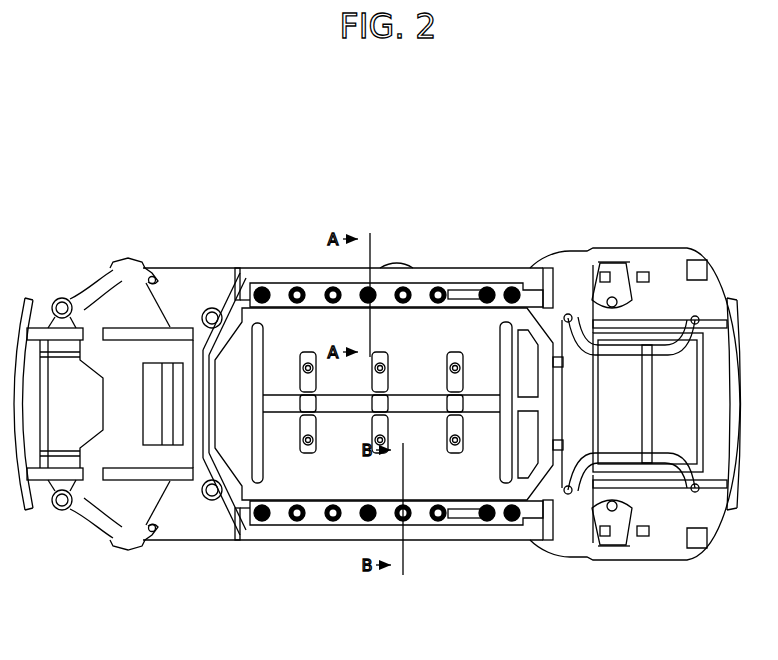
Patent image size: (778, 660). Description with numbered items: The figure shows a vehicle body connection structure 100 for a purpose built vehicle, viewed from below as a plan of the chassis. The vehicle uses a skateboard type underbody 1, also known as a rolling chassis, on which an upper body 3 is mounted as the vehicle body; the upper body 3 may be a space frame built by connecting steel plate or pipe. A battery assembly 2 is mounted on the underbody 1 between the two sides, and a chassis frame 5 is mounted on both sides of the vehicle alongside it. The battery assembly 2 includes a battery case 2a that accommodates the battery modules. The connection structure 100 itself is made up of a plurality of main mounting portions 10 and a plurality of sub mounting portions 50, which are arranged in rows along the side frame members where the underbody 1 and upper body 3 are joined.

The vehicle body connection structure 100 is at (352, 155).
The underbody 1 is at (447, 266).
The upper body 3 is at (190, 266).
The chassis frame 5 is at (348, 536).
The battery assembly 2 is at (467, 494).
The battery case 2a is at (280, 463).
The main mounting portions 10 is at (260, 286).
The sub mounting portions 50 is at (333, 523).